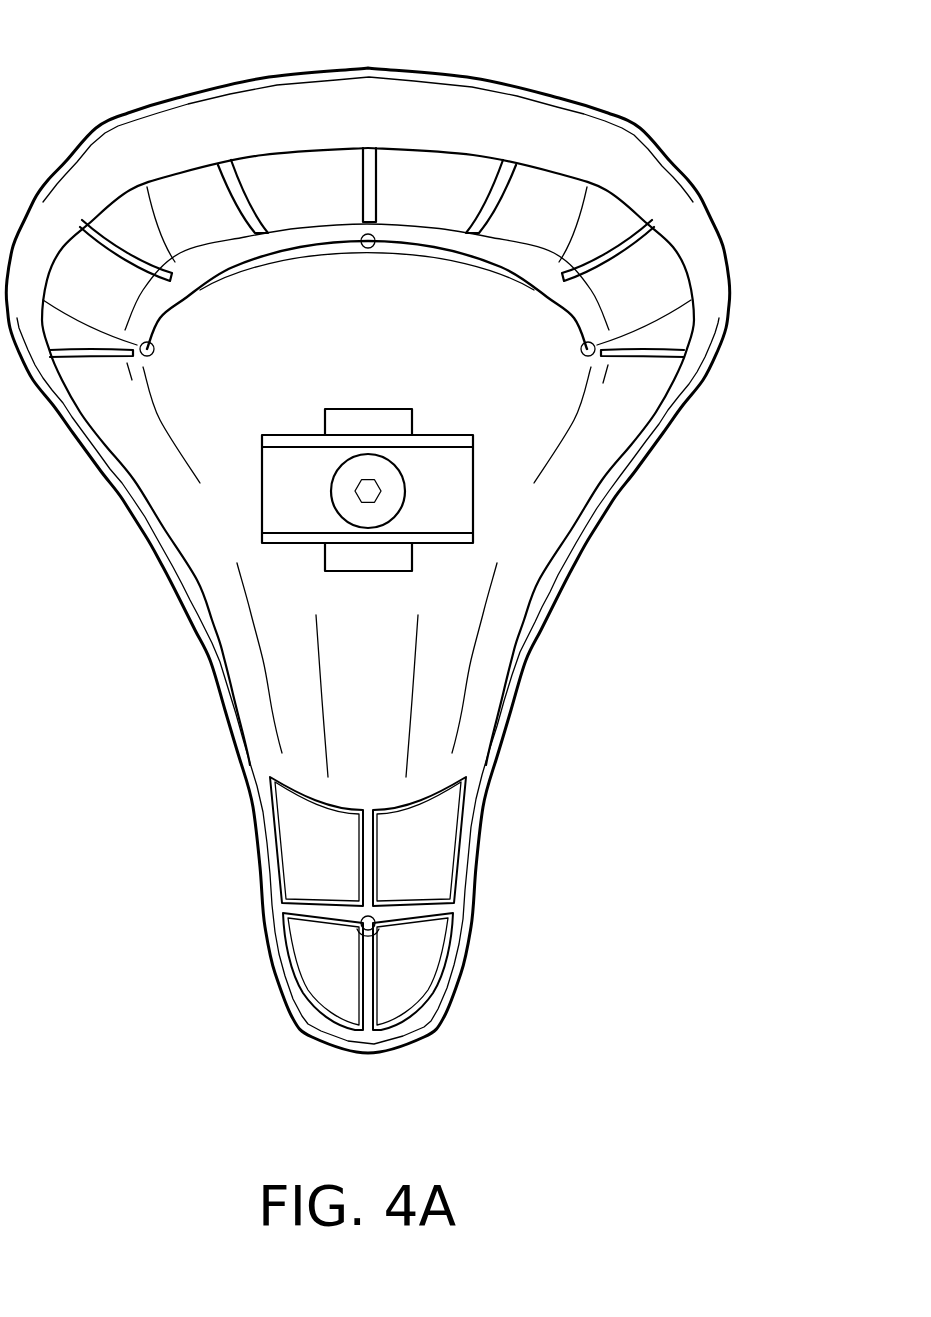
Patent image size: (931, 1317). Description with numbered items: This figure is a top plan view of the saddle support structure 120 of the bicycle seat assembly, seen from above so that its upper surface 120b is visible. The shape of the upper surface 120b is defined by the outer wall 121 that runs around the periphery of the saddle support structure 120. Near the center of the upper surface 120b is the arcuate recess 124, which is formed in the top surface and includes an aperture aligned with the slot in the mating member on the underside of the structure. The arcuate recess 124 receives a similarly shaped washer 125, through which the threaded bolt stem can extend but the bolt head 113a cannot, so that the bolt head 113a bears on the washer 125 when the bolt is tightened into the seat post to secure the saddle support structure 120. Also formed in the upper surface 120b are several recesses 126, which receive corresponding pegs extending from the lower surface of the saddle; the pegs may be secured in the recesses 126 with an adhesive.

The saddle support structure 120 is at (592, 615).
The upper surface 120b is at (408, 737).
The outer wall 121 is at (700, 230).
The arcuate recess 124 is at (308, 543).
The washer 125 is at (298, 498).
The recesses 126 is at (153, 340).
The bolt head 113a is at (392, 484).